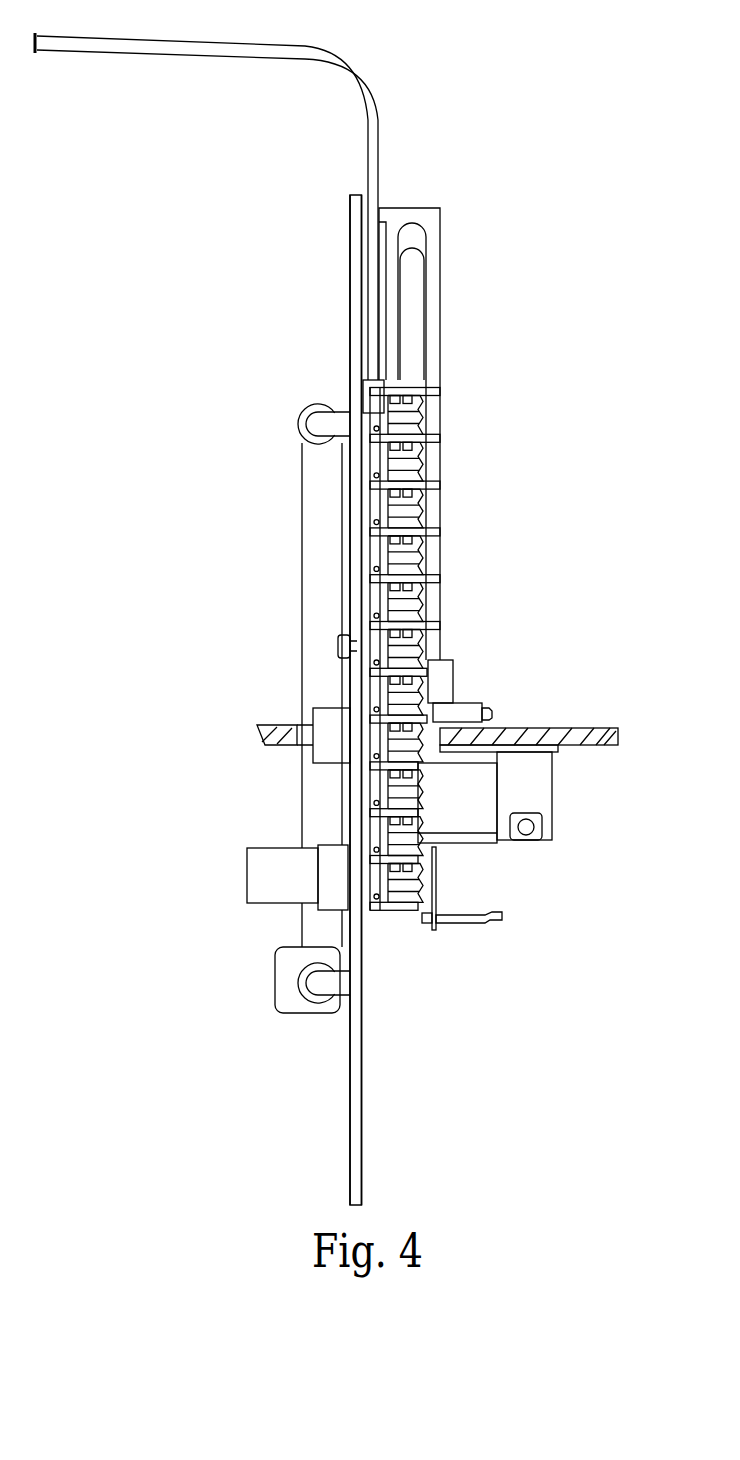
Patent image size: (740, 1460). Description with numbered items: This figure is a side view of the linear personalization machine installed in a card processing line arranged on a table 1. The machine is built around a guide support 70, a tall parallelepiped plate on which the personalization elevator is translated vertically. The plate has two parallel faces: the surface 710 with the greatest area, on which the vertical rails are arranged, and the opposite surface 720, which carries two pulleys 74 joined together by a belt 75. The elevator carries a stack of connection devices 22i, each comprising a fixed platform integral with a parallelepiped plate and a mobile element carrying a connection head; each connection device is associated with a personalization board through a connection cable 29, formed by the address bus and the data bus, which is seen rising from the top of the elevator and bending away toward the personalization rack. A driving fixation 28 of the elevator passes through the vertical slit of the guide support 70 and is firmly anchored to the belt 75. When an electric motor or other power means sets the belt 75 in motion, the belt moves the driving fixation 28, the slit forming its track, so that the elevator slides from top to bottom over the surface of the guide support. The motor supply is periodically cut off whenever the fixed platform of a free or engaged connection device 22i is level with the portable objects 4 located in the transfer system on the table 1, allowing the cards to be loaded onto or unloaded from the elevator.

The table 1 is at (612, 728).
The portable objects 4 is at (425, 575).
The connection device 22i is at (420, 455).
The driving fixation 28 is at (337, 646).
The connection cable 29 is at (350, 63).
The guide support 70 is at (355, 1145).
The pulleys 74 is at (302, 413).
The belt 75 is at (302, 820).
The surface of plate 710 is at (360, 1025).
The surface of plate 720 is at (348, 1092).